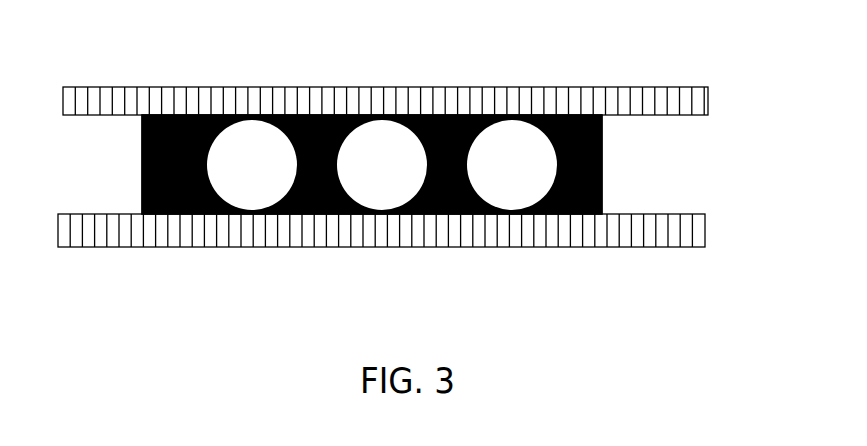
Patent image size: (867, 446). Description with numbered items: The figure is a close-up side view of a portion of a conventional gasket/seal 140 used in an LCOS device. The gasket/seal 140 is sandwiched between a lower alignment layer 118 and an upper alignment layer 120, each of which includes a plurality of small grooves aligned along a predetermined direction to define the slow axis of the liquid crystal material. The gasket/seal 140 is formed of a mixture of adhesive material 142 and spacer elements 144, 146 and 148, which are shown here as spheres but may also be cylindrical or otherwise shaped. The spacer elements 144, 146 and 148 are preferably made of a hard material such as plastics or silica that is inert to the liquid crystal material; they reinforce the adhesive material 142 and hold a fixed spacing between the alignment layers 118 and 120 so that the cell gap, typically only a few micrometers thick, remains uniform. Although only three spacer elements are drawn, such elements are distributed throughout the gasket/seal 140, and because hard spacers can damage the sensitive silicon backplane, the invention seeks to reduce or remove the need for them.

The alignment layer 118 is at (663, 240).
The alignment layer 120 is at (625, 93).
The gasket/seal 140 is at (142, 143).
The adhesive material 142 is at (603, 170).
The spacer element 144 is at (246, 128).
The spacer element 146 is at (370, 127).
The spacer element 148 is at (501, 125).